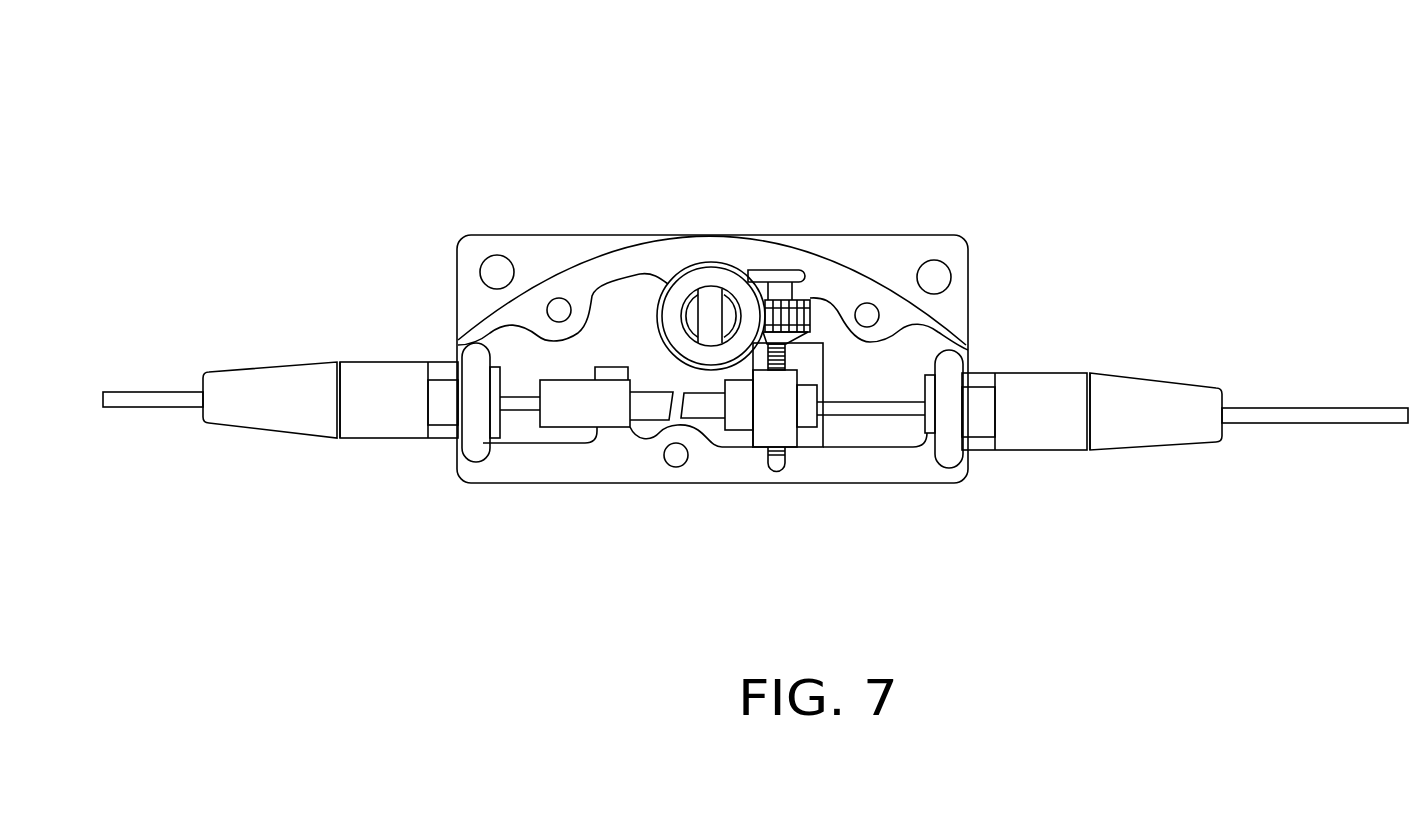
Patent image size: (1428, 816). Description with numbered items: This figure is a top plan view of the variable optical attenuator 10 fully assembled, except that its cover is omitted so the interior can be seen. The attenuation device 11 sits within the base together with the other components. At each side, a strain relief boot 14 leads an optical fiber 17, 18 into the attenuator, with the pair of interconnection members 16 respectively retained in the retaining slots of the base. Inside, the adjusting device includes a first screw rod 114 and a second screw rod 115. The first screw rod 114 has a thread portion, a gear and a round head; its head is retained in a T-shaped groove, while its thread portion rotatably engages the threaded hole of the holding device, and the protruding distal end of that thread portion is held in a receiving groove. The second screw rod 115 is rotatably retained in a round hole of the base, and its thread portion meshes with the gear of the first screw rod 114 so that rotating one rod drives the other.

The variable optical attenuator 10 is at (1314, 78).
The attenuation device 11 is at (709, 426).
The strain relief boots 14 is at (302, 350).
The interconnection members 16 is at (476, 444).
The optical fiber 17 is at (138, 398).
The optical fiber 18 is at (1278, 413).
The first screw rod 114 is at (772, 277).
The second screw rod 115 is at (697, 306).